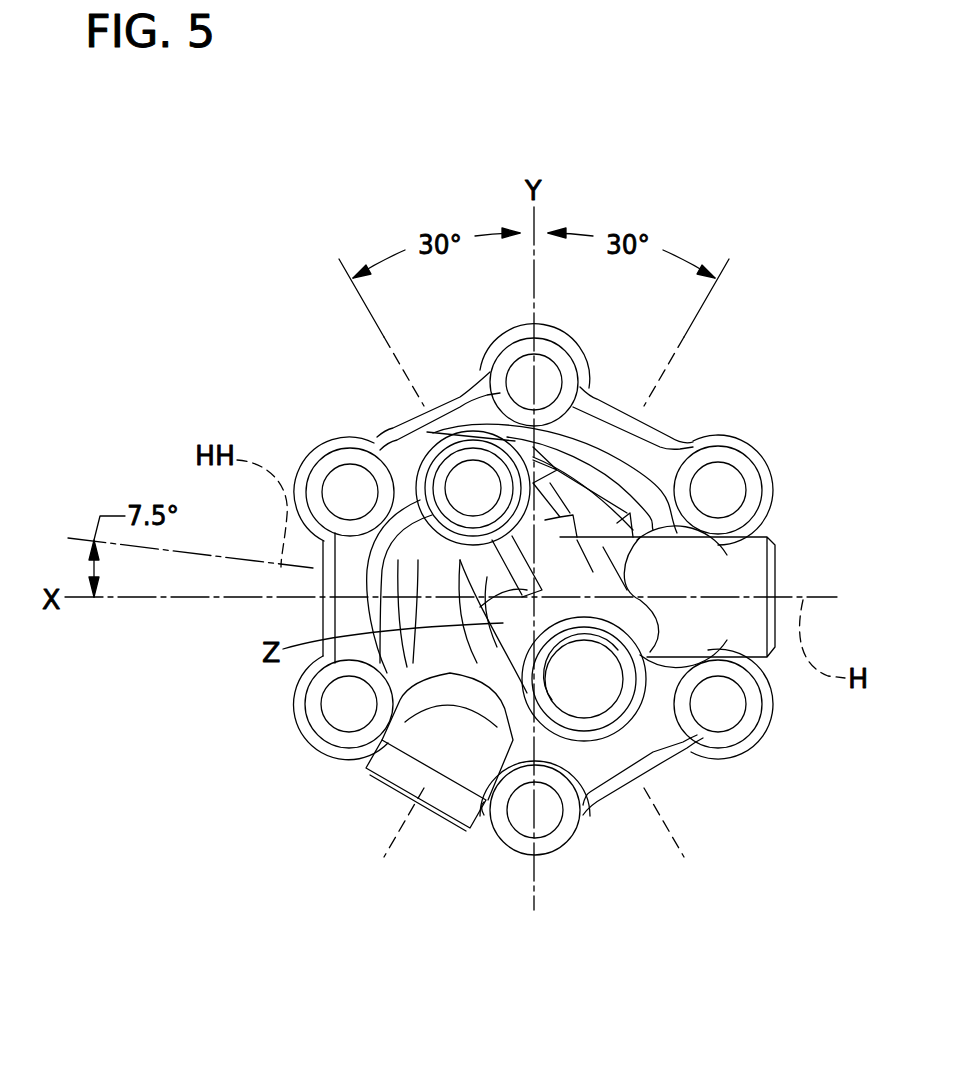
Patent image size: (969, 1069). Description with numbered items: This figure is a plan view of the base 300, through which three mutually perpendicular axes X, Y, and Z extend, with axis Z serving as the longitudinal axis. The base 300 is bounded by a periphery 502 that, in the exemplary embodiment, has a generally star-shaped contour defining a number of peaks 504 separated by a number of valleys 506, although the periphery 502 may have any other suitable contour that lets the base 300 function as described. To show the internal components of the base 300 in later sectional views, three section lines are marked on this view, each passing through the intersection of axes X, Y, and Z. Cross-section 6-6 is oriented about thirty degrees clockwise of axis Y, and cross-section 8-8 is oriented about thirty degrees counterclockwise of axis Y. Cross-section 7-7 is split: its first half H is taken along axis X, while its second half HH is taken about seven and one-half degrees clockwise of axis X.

The base 300 is at (240, 224).
The periphery 502 is at (742, 430).
The peaks 504 is at (312, 437).
The valleys 506 is at (672, 773).
The cross-section 6- 6 is at (623, 317).
The cross-section 7- 7 is at (257, 502).
The cross-section 8- 8 is at (338, 378).